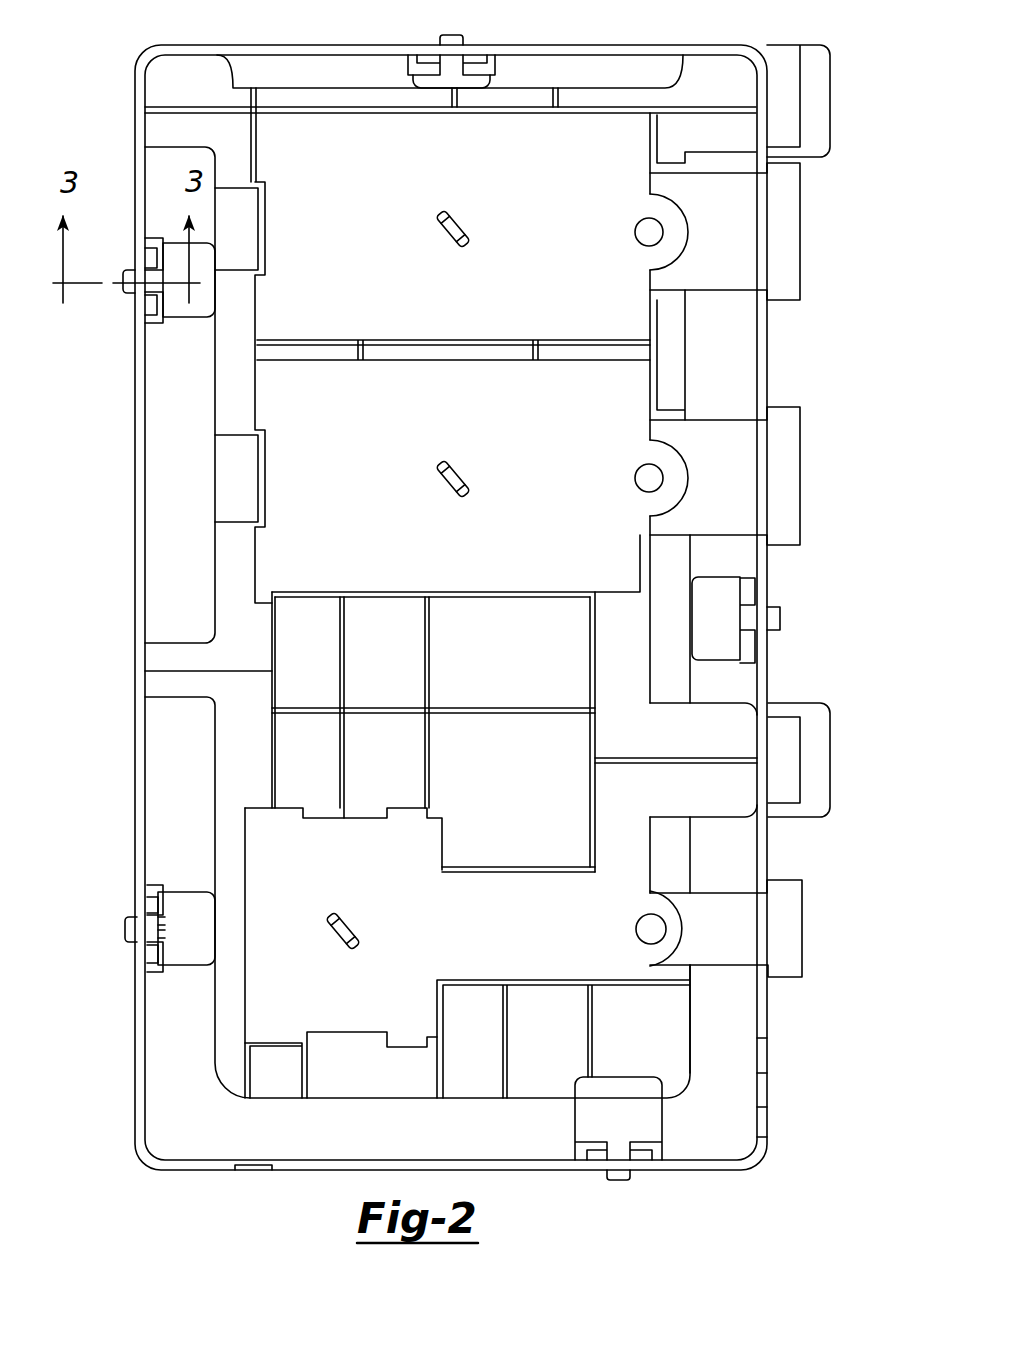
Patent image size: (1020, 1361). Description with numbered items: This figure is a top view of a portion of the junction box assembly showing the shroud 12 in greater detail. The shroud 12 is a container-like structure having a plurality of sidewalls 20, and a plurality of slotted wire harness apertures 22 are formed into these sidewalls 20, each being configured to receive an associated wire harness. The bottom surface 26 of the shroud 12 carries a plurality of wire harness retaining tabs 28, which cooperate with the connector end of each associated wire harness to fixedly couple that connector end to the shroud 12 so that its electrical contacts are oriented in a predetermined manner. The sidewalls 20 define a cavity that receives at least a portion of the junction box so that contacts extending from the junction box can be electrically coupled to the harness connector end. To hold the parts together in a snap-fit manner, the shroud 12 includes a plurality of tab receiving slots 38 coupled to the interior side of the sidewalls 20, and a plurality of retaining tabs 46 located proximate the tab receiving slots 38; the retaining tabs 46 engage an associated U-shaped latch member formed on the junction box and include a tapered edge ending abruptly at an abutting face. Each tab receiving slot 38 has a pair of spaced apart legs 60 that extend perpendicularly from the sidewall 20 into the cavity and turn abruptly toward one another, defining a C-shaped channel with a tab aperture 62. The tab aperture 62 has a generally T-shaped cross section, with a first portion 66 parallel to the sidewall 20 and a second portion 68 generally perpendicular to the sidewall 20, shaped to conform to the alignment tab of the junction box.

The shroud 12 is at (797, 1030).
The sidewalls 20 is at (540, 53).
The wire harness apertures 22 is at (745, 246).
The bottom surface 26 is at (512, 920).
The wire harness retaining tabs 28 is at (463, 221).
The tab receiving slots 38 is at (403, 67).
The retaining tabs 46 is at (175, 916).
The legs 60 is at (158, 898).
The tab aperture 62 is at (161, 921).
The first portion 66 is at (153, 905).
The second portion 68 is at (158, 932).